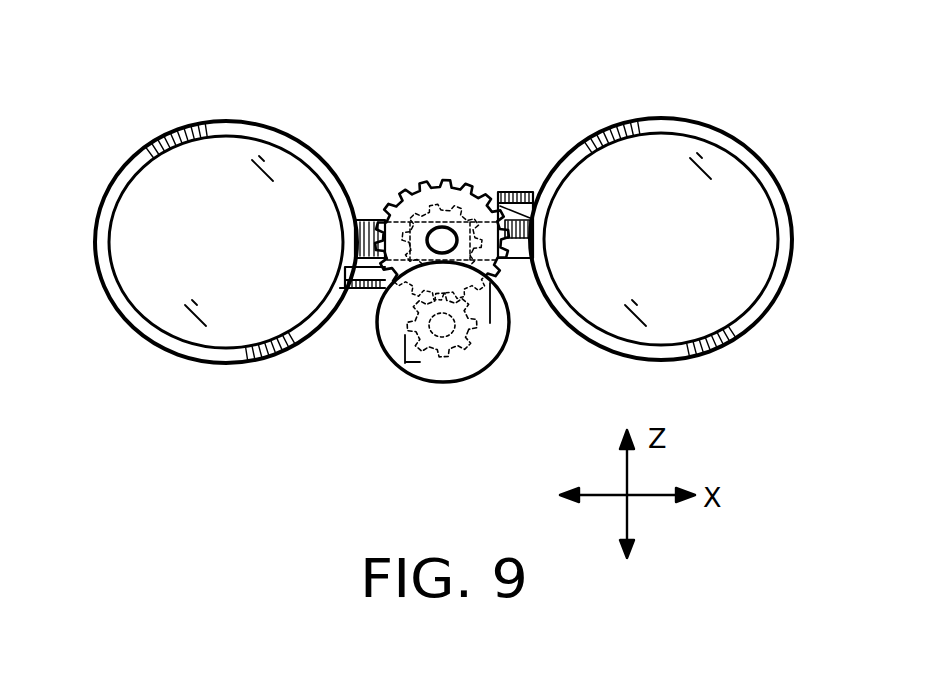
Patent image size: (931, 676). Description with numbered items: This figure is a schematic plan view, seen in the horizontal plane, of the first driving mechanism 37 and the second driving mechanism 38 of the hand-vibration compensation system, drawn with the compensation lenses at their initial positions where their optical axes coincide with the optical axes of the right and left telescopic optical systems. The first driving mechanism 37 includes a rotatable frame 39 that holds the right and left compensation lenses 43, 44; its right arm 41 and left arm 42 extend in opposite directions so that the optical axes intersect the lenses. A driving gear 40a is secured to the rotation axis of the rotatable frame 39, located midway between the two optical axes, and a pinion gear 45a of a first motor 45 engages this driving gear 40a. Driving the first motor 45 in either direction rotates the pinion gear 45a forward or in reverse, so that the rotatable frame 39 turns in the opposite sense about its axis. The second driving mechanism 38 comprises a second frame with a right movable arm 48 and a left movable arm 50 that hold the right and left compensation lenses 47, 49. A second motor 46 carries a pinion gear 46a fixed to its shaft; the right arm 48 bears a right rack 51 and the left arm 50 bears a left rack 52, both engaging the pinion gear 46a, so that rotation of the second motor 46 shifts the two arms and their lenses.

The first driving mechanism 37 is at (543, 82).
The second driving mechanism 38 is at (399, 148).
The rotatable frame 39 is at (365, 216).
The driving gear 40a is at (432, 182).
The right arm 41 is at (208, 232).
The left arm 42 is at (680, 227).
The right compensation lens 43 is at (226, 278).
The left compensation lens 44 is at (664, 275).
The first motor 45 is at (423, 350).
The pinion gear 45a is at (457, 353).
The second motor 46 is at (495, 193).
The pinion gear 46a is at (458, 241).
The right compensation lens 47 is at (230, 308).
The right movable arm 48 is at (140, 156).
The left compensation lens 49 is at (663, 302).
The left movable arm 50 is at (790, 127).
The right rack 51 is at (352, 292).
The left rack 52 is at (522, 196).